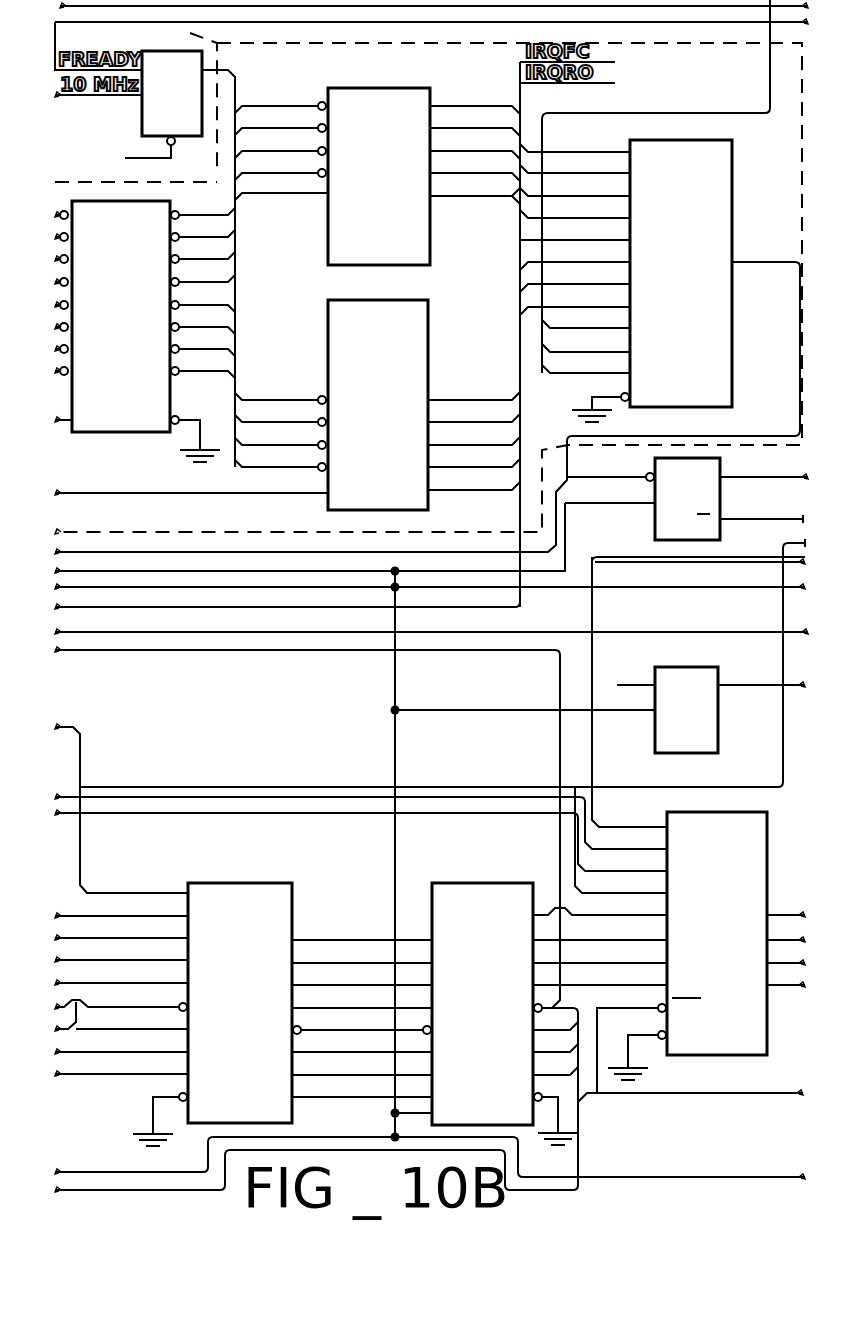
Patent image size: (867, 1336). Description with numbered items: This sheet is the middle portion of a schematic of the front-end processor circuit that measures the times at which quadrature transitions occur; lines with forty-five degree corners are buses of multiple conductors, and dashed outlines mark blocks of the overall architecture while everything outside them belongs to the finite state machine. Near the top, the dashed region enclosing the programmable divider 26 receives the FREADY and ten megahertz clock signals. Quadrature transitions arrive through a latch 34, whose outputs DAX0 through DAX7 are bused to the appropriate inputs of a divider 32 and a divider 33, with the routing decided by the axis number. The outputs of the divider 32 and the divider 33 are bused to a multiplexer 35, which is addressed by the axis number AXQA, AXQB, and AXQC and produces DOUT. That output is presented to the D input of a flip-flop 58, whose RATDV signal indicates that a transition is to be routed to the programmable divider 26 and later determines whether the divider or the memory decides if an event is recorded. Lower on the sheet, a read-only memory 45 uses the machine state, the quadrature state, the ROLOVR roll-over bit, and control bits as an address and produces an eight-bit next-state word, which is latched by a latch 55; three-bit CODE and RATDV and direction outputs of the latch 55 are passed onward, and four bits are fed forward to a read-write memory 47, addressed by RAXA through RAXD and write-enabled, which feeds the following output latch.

The programmable divider 26 is at (180, 245).
The divider 32 is at (394, 179).
The divider 33 is at (394, 416).
The latch 34 is at (130, 336).
The multiplexer 35 is at (695, 283).
The read-only memory (ROM) 45 is at (254, 1012).
The read-write memory (RAM) 47 is at (733, 952).
The latch 55 is at (498, 1012).
The flip-flop 58 is at (655, 522).